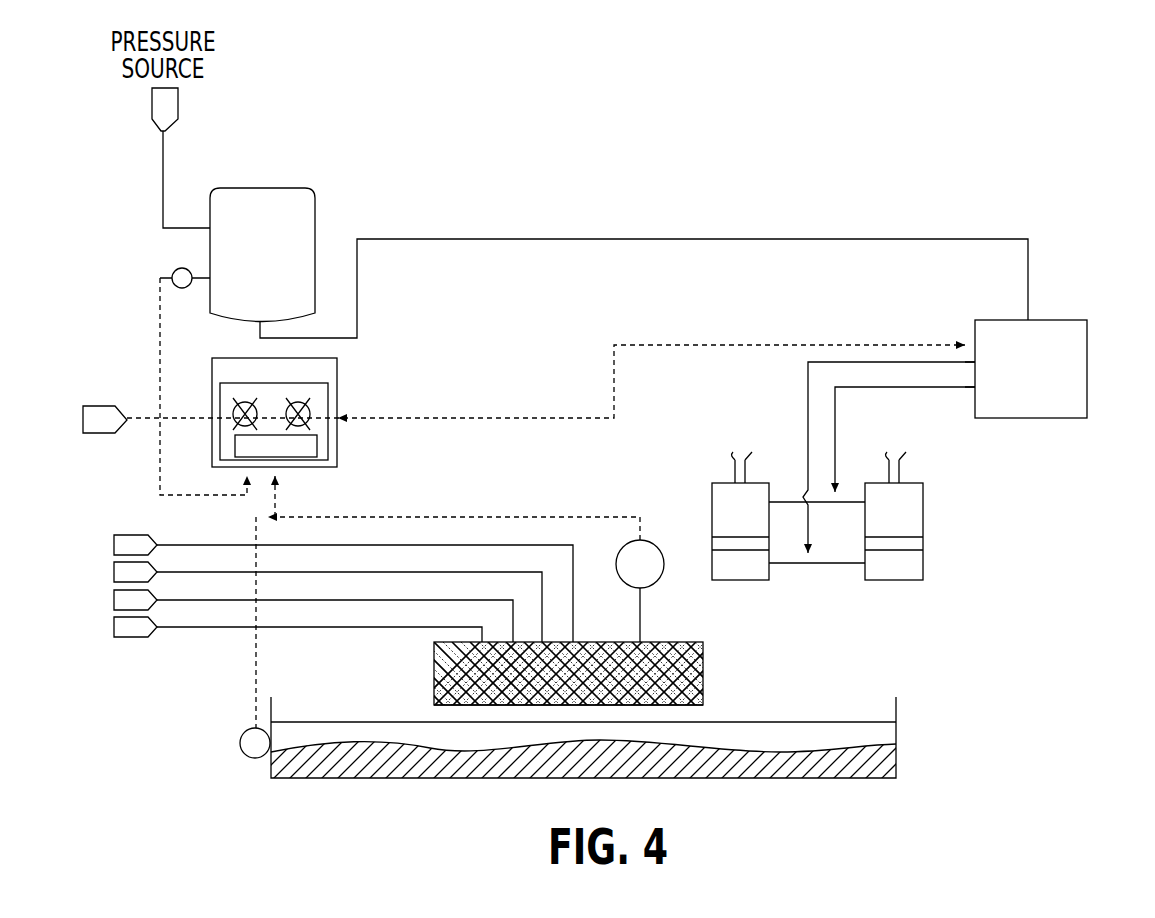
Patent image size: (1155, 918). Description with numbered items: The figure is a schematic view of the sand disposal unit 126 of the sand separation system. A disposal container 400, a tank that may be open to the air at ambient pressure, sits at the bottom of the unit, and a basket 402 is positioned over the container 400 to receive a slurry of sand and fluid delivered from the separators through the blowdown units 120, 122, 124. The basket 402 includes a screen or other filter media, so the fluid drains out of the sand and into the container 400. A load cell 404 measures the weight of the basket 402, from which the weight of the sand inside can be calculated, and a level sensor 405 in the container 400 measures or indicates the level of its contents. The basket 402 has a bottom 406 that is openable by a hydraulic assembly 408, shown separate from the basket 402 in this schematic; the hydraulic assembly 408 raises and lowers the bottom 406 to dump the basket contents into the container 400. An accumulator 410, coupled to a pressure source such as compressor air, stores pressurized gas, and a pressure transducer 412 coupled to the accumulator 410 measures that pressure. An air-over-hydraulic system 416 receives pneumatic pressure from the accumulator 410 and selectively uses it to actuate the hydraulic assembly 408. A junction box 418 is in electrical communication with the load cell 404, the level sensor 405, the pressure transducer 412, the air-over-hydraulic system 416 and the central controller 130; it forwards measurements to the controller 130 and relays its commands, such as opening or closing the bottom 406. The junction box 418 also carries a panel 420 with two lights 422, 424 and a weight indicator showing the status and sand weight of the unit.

The blowdown unit 120 is at (106, 554).
The blowdown unit 122 is at (106, 581).
The blowdown unit 124 is at (106, 609).
The sand disposal unit 126 is at (106, 636).
The central controller 130 is at (74, 432).
The disposal container 400 is at (896, 717).
The basket 402 is at (703, 665).
The load cell 404 is at (662, 582).
The level sensor 405 is at (240, 745).
The bottom 406 is at (695, 711).
The hydraulic assembly 408 is at (985, 522).
The accumulator 410 is at (267, 187).
The pressure transducer 412 is at (175, 270).
The air-over-hydraulic system 416 is at (1087, 350).
The junction box 418 is at (338, 375).
The panel 420 is at (232, 383).
The light 422 is at (222, 432).
The light 424 is at (338, 420).